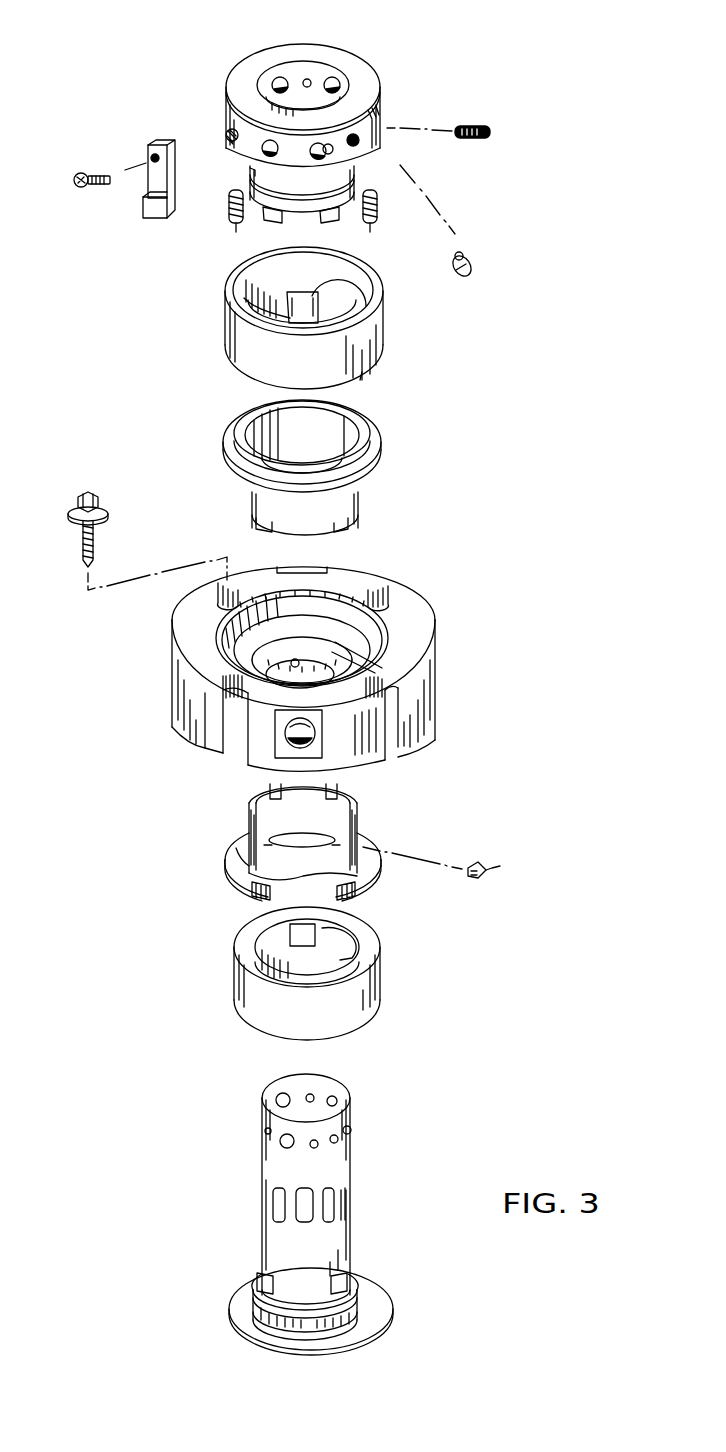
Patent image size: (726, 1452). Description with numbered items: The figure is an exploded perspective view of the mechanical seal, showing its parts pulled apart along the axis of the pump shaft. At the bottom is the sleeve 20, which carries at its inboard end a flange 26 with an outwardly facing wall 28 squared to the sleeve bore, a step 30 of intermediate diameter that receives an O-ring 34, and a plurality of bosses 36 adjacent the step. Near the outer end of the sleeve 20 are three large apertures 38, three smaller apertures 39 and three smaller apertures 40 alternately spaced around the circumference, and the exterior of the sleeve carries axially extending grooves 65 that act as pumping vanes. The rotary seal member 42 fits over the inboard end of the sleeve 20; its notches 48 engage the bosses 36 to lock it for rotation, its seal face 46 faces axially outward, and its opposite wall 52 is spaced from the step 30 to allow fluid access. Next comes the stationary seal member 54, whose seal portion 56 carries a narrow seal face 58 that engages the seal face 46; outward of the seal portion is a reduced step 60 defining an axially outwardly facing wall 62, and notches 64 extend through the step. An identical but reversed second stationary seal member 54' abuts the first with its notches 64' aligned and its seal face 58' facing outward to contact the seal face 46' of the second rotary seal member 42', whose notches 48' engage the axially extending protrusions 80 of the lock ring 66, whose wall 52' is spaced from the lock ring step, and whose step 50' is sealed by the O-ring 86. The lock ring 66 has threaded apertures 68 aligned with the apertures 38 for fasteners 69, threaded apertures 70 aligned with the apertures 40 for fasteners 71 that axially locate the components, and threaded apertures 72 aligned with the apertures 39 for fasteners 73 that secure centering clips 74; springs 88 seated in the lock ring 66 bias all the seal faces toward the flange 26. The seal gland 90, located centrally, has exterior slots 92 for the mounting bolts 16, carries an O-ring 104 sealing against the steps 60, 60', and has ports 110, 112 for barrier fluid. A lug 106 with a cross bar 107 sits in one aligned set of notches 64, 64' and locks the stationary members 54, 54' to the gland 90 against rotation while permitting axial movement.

The bolts 16 is at (94, 538).
The sleeve 20 is at (261, 1212).
The flange 26 is at (380, 1322).
The outwardly facing wall 28 is at (240, 1300).
The step 30 is at (303, 1320).
The O-ring 34 is at (263, 1318).
The bosses 36 is at (342, 1290).
The large apertures 38 is at (283, 1136).
The smaller apertures 39 is at (265, 1131).
The smaller apertures 40 is at (311, 1145).
The rotary seal member 42 is at (285, 973).
The second rotary seal member 42' is at (281, 318).
The seal face 46 is at (279, 959).
The seal face 46' is at (391, 368).
The notches 48 is at (354, 927).
The notches 48' is at (361, 300).
The step 50' is at (362, 277).
The axially inwardly facing wall 52 is at (372, 957).
The wall 52' is at (268, 301).
The stationary seal member 54 is at (333, 833).
The second stationary seal member 54' is at (326, 446).
The seal portion 56 is at (378, 878).
The seal face 58 is at (280, 902).
The seal face 58' is at (285, 437).
The step 60 is at (271, 829).
The step 60' is at (281, 509).
The axially outwardly facing wall 62 is at (236, 851).
The notches 64 is at (307, 792).
The notches 64' is at (314, 528).
The axially extending grooves 65 is at (274, 1195).
The lock ring 66 is at (293, 48).
The threaded apertures 68 is at (275, 81).
The fasteners 69 is at (472, 126).
The threaded apertures 70 is at (340, 85).
The threaded fasteners 71 is at (464, 258).
The threaded apertures 72 is at (311, 83).
The threaded fasteners 73 is at (97, 189).
The centering clips 74 is at (150, 212).
The axially extending protrusions 80 is at (270, 219).
The O-ring 86 is at (252, 172).
The springs 88 is at (229, 210).
The seal gland 90 is at (172, 681).
The slots 92 is at (219, 597).
The O-ring 104 is at (362, 660).
The lug 106 is at (478, 866).
The cross bar 107 is at (488, 873).
The port 110 is at (283, 737).
The port 112 is at (299, 665).